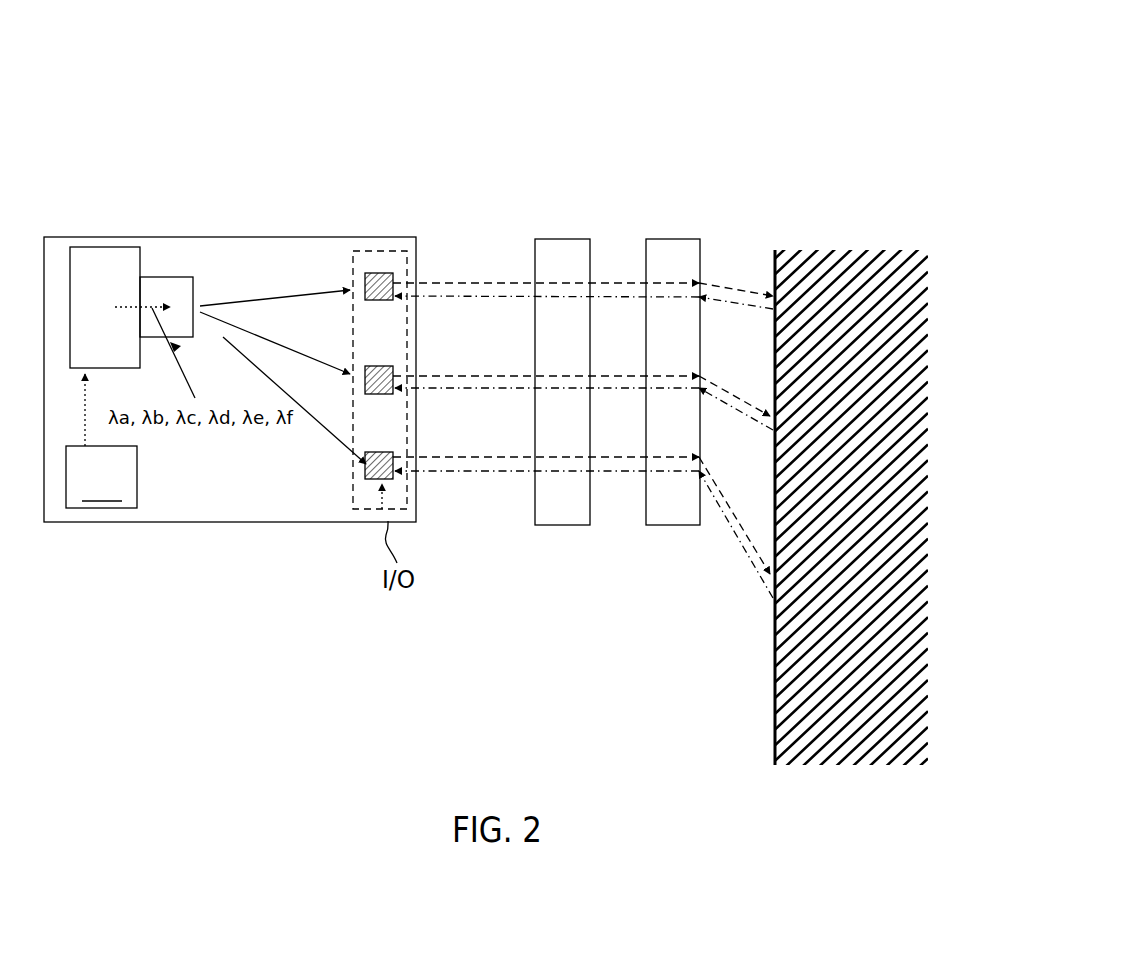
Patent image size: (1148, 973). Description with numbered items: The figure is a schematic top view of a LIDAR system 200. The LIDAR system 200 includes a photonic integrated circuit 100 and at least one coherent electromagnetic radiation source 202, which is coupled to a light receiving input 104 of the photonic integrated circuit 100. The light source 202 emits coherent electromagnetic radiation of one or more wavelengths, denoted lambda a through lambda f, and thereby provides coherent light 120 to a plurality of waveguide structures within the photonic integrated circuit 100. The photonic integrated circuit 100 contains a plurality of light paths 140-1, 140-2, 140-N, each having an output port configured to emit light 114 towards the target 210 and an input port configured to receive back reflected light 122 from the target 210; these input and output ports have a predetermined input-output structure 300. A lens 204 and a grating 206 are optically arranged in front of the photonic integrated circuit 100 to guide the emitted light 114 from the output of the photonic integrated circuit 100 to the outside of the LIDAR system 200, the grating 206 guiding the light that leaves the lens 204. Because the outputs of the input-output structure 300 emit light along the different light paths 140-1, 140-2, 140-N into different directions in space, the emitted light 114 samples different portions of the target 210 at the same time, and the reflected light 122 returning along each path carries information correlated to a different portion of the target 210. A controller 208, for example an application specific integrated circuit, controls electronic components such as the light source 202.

The LIDAR system 200 is at (721, 110).
The photonic integrated circuit 100 is at (370, 237).
The coherent electromagnetic radiation source 202 is at (114, 247).
The light receiving input 104 is at (185, 277).
The controller 208 is at (101, 441).
The coherent electromagnetic radiation 120 is at (285, 298).
The I/O structure 300 is at (412, 256).
The lens 204 is at (570, 239).
The grating 206 is at (677, 239).
The emitted light 114 is at (632, 458).
The back reflected light 122 is at (597, 471).
The first light path 140-1 is at (703, 283).
The second light path 140-2 is at (732, 366).
The Nth light path 140-N is at (725, 448).
The target 210 is at (865, 250).